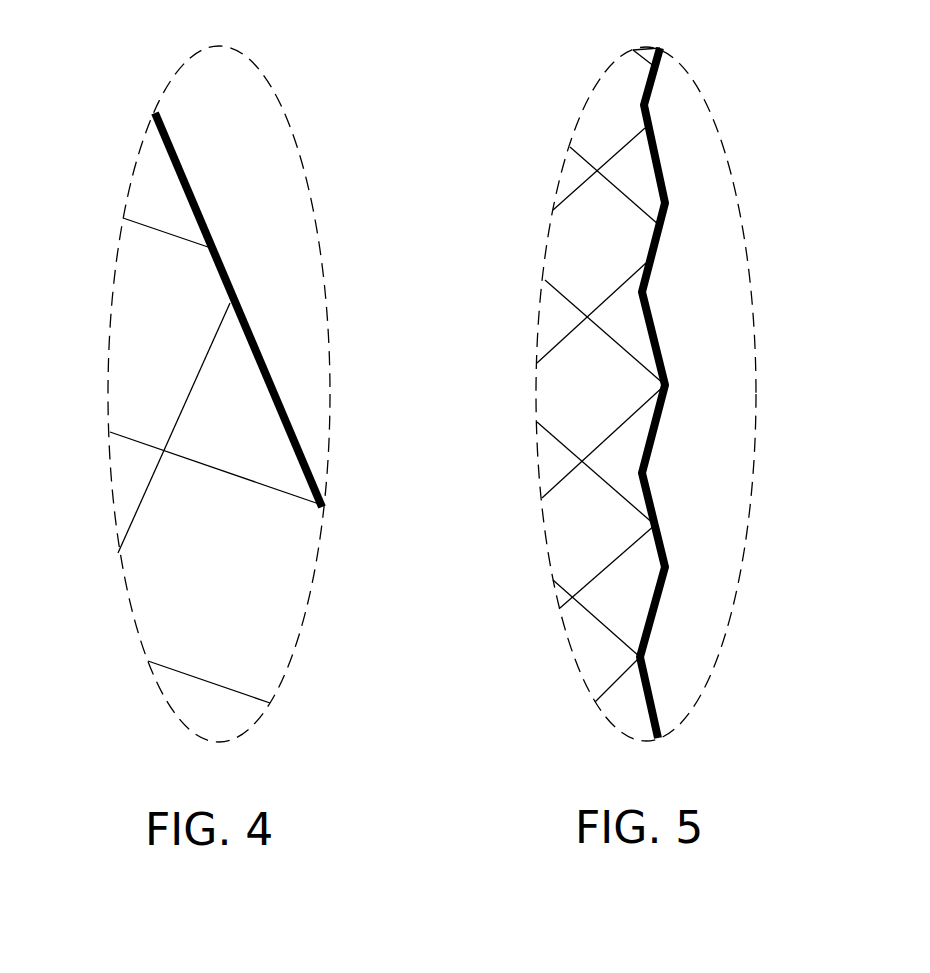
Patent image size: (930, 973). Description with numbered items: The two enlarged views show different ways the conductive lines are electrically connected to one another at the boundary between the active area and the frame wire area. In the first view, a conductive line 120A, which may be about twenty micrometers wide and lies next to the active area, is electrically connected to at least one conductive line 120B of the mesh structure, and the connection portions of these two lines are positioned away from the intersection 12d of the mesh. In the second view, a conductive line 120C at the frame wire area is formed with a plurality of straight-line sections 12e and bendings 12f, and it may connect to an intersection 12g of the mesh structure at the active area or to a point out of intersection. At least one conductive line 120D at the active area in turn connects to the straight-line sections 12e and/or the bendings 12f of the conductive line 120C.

In FIG. 4, the conductive line 120A is at (296, 431).
In FIG. 4, the conductive line of the mesh structure 120B is at (135, 437).
In FIG. 4, the intersection of the mesh structure 12d is at (169, 456).
In FIG. 5, the conductive line at the frame wire area 120C is at (652, 700).
In FIG. 5, the conductive line at the active area 120D is at (557, 484).
In FIG. 5, the straight-line section 12e is at (656, 242).
In FIG. 5, the bending 12f is at (646, 291).
In FIG. 5, the intersection 12g is at (660, 387).